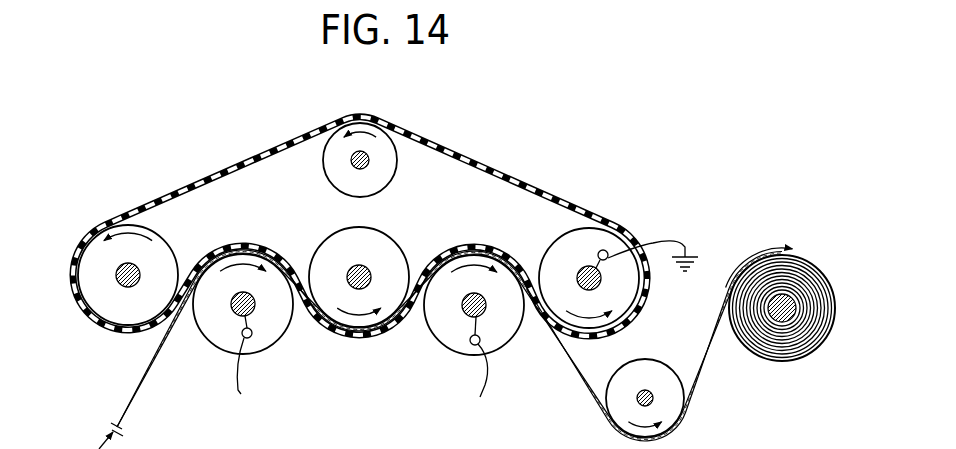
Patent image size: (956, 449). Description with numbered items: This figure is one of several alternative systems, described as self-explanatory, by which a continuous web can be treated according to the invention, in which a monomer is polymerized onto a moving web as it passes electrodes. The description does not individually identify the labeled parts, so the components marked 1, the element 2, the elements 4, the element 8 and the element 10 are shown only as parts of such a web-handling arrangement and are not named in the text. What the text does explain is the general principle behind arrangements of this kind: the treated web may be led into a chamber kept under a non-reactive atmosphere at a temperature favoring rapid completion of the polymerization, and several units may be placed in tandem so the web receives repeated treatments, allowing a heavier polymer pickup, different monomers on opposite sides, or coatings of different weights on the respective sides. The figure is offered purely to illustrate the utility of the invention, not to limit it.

The roller 1 is at (93, 263).
The endless belt 2 is at (477, 163).
The brush / discharge contact 4 is at (249, 384).
The wind-up roll 8 is at (797, 322).
The web 10 is at (163, 352).